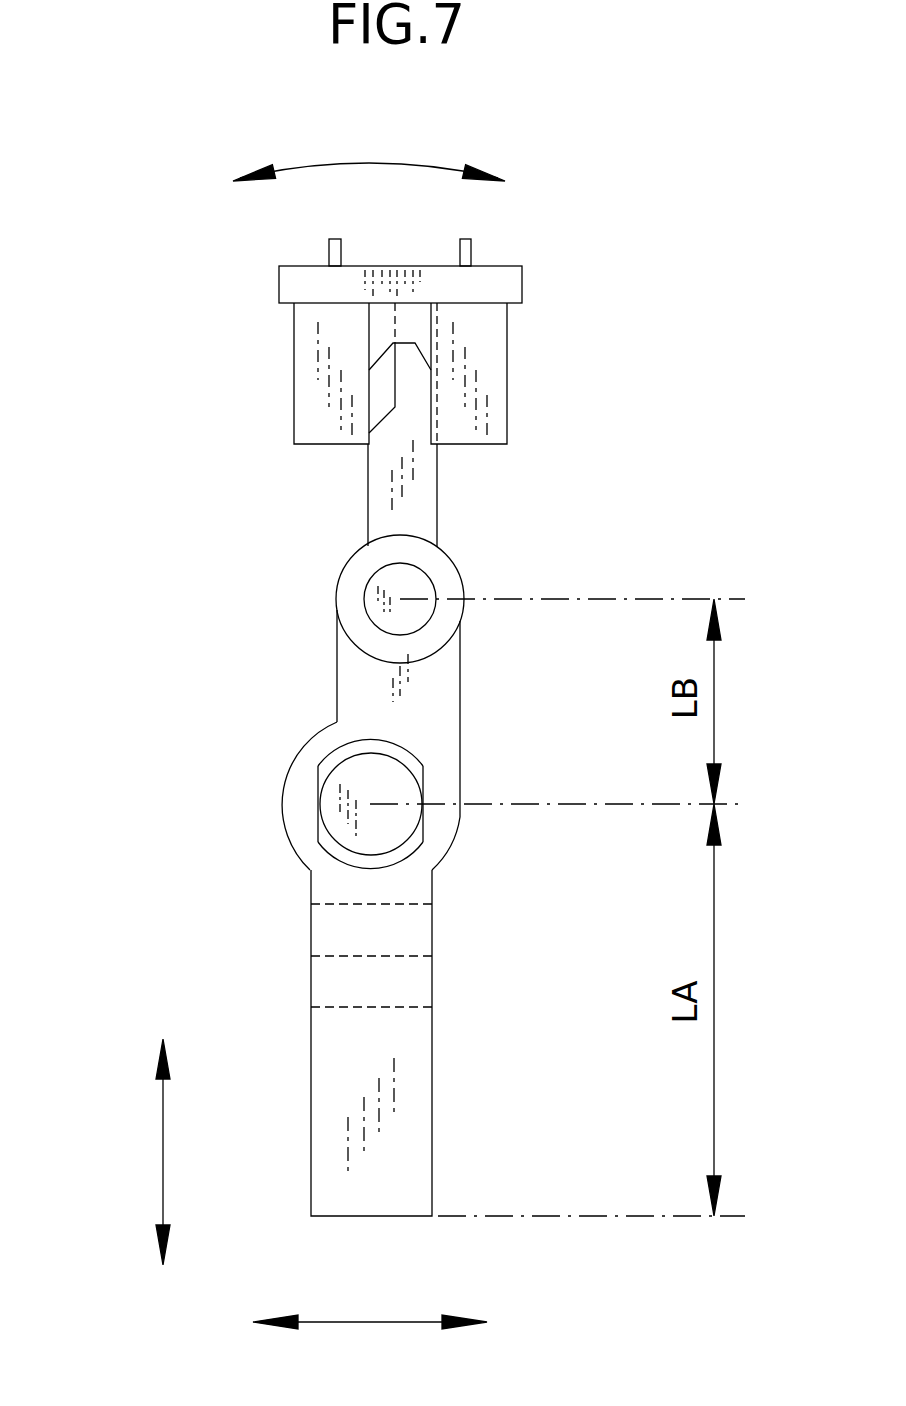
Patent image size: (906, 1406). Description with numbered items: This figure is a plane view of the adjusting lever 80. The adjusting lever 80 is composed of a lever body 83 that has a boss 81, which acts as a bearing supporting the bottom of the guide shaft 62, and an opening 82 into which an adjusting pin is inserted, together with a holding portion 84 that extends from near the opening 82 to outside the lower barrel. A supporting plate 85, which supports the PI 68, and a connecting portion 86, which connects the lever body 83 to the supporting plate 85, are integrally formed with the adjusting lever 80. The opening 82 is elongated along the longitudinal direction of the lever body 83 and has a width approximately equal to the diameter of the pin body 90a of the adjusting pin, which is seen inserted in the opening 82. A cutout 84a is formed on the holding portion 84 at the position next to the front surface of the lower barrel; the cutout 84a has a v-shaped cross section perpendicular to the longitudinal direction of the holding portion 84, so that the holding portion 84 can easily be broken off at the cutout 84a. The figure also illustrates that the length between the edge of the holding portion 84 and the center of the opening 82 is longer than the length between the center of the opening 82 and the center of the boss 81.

The adjusting lever 80 is at (470, 1191).
The supporting plate 85 is at (279, 283).
The PI 68 is at (507, 339).
The connecting portion 86 is at (437, 497).
The boss (bearing) 81 is at (337, 582).
The guide shaft 62 is at (433, 583).
The lever body 83 is at (337, 668).
The pin body 90a is at (318, 762).
The opening 82 is at (318, 835).
The holding portion 84 is at (311, 1128).
The cutout 84a is at (407, 957).